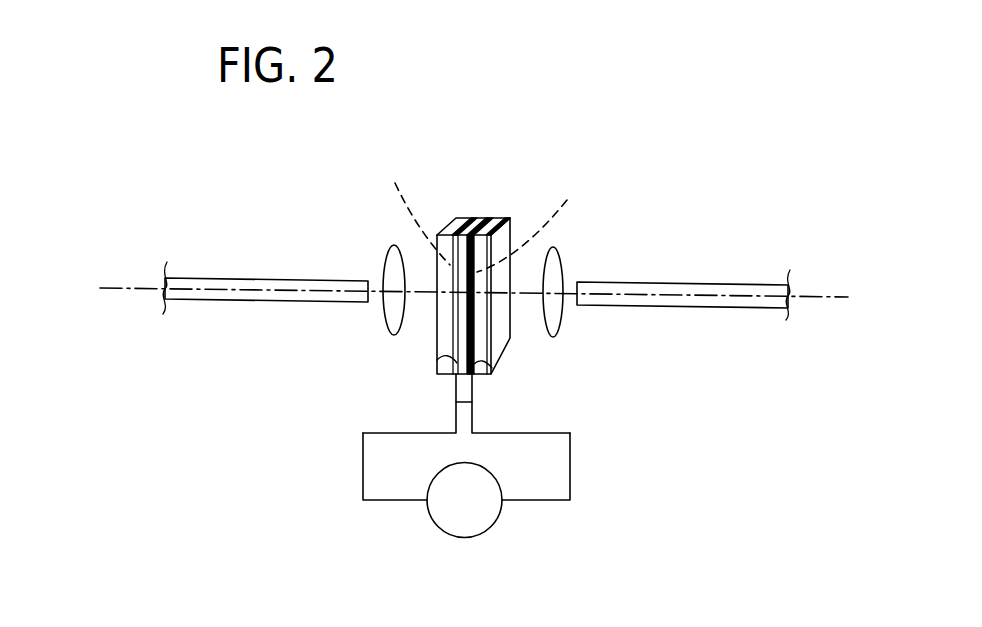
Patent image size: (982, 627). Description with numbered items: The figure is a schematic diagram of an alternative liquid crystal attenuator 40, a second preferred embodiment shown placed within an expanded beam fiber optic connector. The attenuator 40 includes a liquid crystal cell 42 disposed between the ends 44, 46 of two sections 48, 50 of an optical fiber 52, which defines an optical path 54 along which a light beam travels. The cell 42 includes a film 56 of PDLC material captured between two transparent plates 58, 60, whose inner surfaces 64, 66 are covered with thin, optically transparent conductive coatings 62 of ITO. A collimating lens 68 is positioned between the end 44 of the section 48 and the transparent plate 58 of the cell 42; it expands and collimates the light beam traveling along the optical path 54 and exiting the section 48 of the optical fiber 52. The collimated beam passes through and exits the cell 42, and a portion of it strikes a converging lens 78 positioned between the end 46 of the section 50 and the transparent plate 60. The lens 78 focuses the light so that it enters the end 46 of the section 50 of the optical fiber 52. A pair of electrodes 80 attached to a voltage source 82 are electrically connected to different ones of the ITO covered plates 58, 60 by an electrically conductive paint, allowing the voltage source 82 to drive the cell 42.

The liquid crystal attenuator 40 is at (598, 193).
The liquid crystal cell 42 is at (466, 217).
The end 44 is at (384, 281).
The end 46 is at (570, 284).
The section 48 is at (228, 278).
The section 50 is at (748, 291).
The optical fiber 52 is at (312, 278).
The optical path 54 is at (823, 297).
The film 56 is at (482, 217).
The transparent plate 58 is at (452, 218).
The transparent plate 60 is at (503, 217).
The conductive coatings 62 is at (437, 360).
The inner surface 64 is at (417, 211).
The inner surface 66 is at (530, 224).
The collimating lens 68 is at (392, 334).
The converging lens 78 is at (550, 337).
The electrodes 80 is at (473, 402).
The voltage source 82 is at (497, 520).